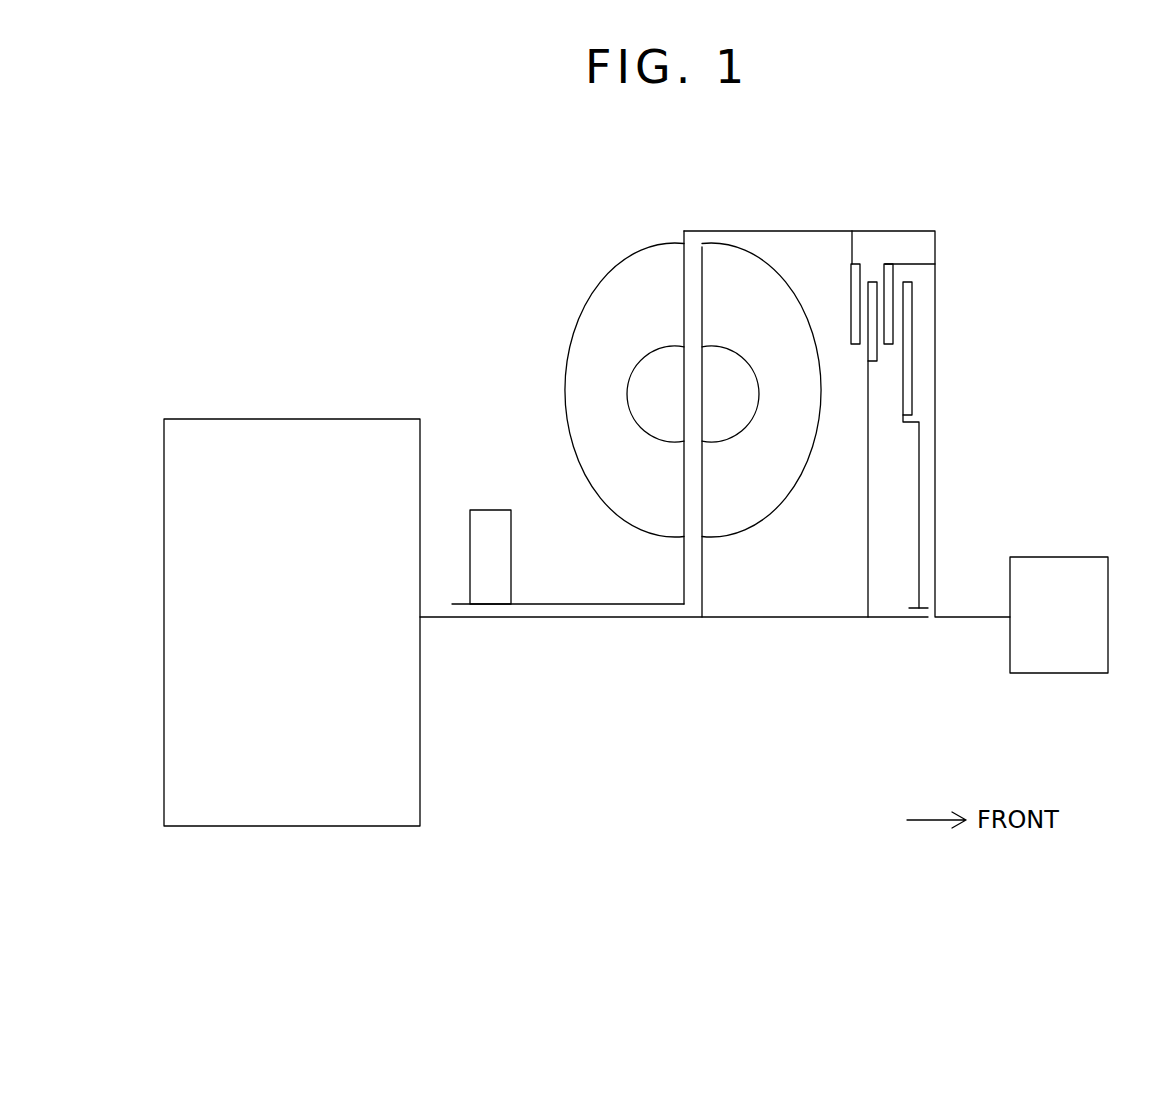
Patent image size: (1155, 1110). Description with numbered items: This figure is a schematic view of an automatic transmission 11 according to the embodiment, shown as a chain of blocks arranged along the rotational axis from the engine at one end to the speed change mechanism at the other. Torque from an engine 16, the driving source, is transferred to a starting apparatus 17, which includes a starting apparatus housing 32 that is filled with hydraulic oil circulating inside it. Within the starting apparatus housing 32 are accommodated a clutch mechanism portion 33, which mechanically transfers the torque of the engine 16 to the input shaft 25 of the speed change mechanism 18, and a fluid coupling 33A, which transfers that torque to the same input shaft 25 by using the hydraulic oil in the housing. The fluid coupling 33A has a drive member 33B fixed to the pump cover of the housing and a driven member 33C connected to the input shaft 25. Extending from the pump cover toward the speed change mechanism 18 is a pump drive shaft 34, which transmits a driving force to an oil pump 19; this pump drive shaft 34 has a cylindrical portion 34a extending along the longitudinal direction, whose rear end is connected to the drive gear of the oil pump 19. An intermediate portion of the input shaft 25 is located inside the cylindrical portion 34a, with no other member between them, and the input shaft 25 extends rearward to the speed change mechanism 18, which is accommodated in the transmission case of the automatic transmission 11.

The automatic transmission 11 is at (1084, 179).
The engine 16 is at (1060, 557).
The starting apparatus 17 is at (931, 202).
The speed change mechanism 18 is at (291, 417).
The oil pump 19 is at (490, 510).
The input shaft 25 is at (614, 619).
The starting apparatus housing 32 is at (707, 231).
The clutch mechanism portion 33 is at (929, 381).
The fluid coupling 33A is at (536, 236).
The drive member 33B is at (635, 288).
The driven member 33C is at (720, 258).
The pump drive shaft 34 is at (568, 575).
The cylindrical portion 34a is at (635, 604).